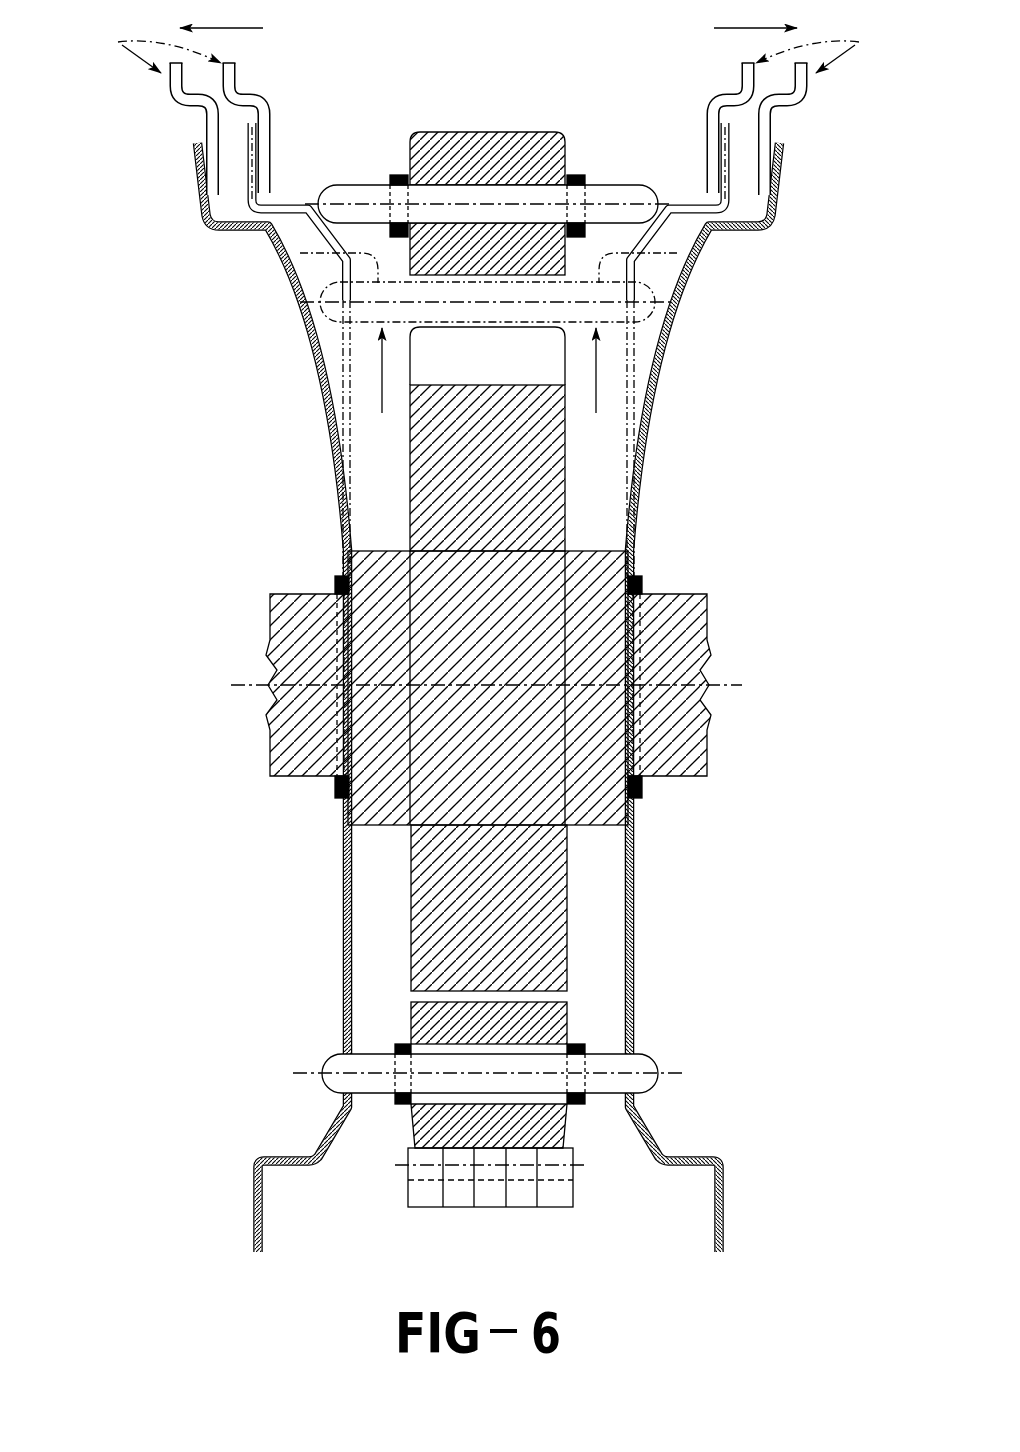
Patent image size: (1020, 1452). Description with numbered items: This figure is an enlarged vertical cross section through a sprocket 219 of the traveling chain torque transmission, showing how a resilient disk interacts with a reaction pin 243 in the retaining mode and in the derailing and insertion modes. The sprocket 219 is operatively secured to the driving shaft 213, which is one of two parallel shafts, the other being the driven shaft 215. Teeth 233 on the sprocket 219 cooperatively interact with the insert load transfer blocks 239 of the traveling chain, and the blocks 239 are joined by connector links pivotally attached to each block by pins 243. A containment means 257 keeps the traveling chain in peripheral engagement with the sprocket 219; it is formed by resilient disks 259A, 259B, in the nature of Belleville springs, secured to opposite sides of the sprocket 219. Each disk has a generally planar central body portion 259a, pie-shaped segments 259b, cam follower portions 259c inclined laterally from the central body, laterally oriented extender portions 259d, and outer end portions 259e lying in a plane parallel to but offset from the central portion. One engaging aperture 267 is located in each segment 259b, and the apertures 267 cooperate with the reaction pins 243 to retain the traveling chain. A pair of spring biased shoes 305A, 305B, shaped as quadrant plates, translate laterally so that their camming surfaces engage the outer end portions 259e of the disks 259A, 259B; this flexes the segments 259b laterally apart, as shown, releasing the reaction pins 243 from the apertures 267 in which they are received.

The shoe 305A is at (161, 50).
The shoe 305B is at (821, 50).
The insert load transfer block 239 is at (484, 128).
The reaction pin 243 is at (370, 193).
The driven shaft 215 is at (768, 137).
The containment means 257 is at (750, 281).
The resilient disk 259A is at (313, 392).
The resilient disk 259B is at (662, 393).
The central body portion 259a is at (629, 565).
The segment 259b is at (648, 430).
The cam follower portion 259c is at (685, 255).
The extender portion 259d is at (742, 228).
The outer end portion 259e is at (777, 177).
The engaging aperture 267 is at (663, 313).
The sprocket tooth 233 is at (443, 358).
The sprocket 219 is at (527, 495).
The driving shaft 213 is at (681, 647).